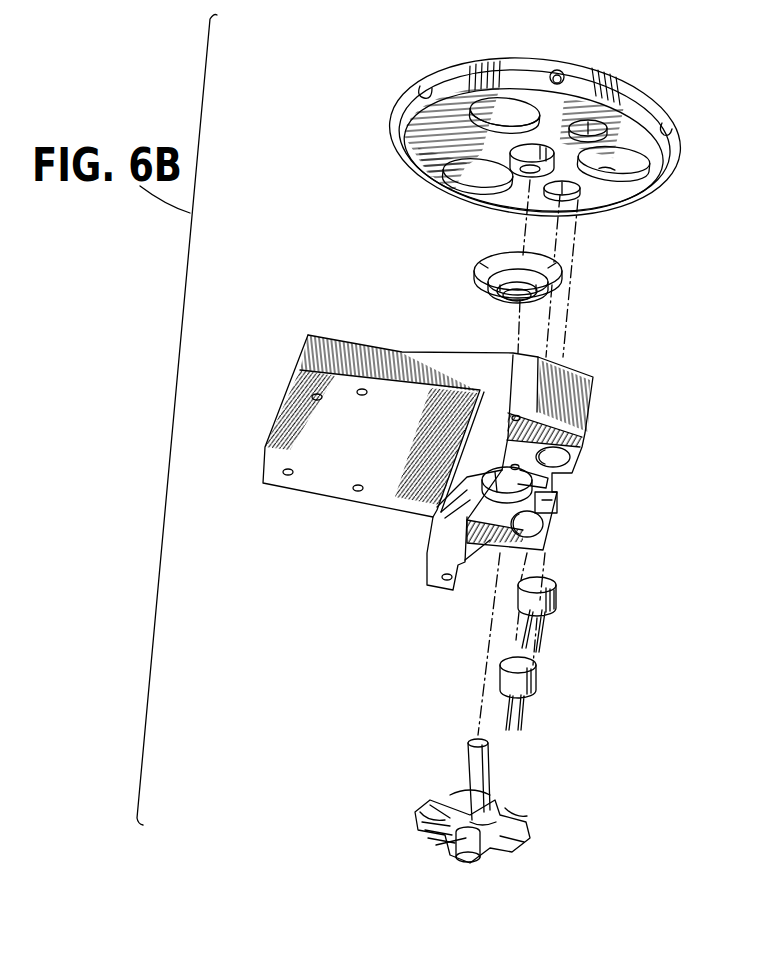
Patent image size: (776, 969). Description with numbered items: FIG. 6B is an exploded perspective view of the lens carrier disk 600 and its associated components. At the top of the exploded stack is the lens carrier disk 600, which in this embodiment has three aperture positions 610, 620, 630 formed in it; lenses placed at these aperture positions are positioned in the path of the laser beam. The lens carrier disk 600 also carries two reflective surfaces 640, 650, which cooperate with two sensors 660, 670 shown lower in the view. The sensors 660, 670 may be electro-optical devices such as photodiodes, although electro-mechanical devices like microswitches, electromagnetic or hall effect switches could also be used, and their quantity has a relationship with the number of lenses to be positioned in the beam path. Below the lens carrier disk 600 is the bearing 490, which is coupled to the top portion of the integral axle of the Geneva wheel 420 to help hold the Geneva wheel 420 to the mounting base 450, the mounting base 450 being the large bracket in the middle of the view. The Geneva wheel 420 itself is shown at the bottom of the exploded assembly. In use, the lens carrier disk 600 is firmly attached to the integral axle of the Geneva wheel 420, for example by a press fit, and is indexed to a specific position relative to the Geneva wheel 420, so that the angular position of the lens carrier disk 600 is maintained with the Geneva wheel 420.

The lens carrier disk 600 is at (648, 92).
The aperture position 610 is at (640, 177).
The aperture position 620 is at (445, 185).
The aperture position 630 is at (470, 90).
The reflective surface 640 is at (580, 118).
The reflective surface 650 is at (580, 210).
The bearing 490 is at (480, 278).
The mounting base 450 is at (335, 342).
The sensor 660 is at (558, 600).
The sensor 670 is at (538, 680).
The Geneva wheel 420 is at (522, 817).